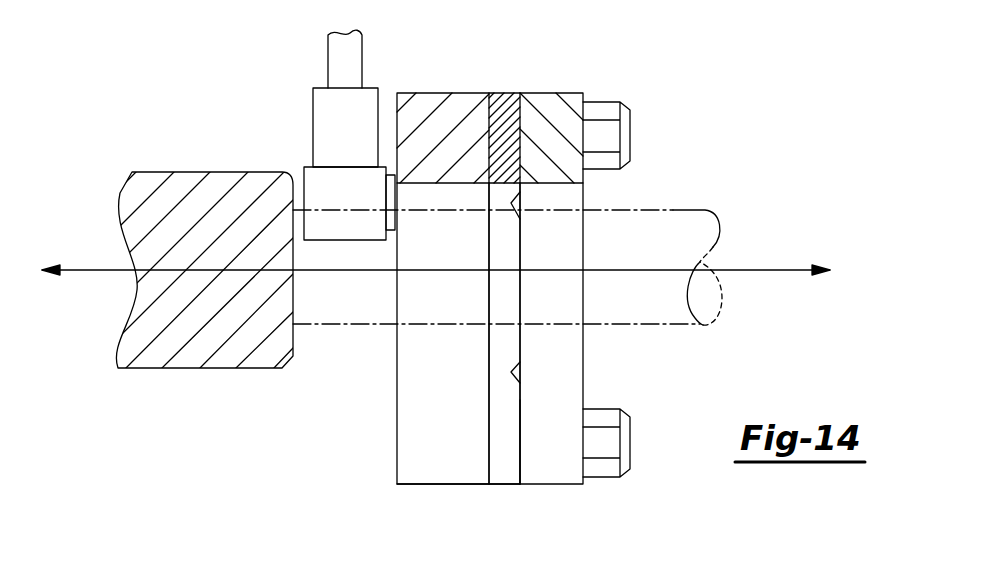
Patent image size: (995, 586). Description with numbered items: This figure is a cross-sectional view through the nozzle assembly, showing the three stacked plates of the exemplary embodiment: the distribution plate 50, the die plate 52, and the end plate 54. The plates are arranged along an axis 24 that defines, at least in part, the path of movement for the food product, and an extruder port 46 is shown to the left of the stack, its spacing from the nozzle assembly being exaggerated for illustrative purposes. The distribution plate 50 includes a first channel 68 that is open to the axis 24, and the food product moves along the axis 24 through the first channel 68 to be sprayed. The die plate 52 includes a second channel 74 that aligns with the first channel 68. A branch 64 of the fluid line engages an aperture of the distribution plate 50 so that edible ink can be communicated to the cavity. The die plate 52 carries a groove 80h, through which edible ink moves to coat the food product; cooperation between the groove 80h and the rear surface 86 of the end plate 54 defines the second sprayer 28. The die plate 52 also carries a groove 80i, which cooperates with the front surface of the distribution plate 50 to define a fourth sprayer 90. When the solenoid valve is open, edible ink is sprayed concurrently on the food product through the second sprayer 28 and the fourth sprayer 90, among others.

The axis 24 is at (772, 270).
The second sprayer 28 is at (537, 182).
The extruder port 46 is at (187, 195).
The distribution plate 50 is at (422, 463).
The die plate 52 is at (508, 462).
The end plate 54 is at (560, 462).
The branch 64 is at (350, 62).
The first channel 68 is at (430, 420).
The second channel 74 is at (502, 401).
The groove 80h is at (518, 199).
The groove 80i is at (516, 368).
The third rear surface 86 is at (518, 422).
The fourth sprayer 90 is at (538, 383).